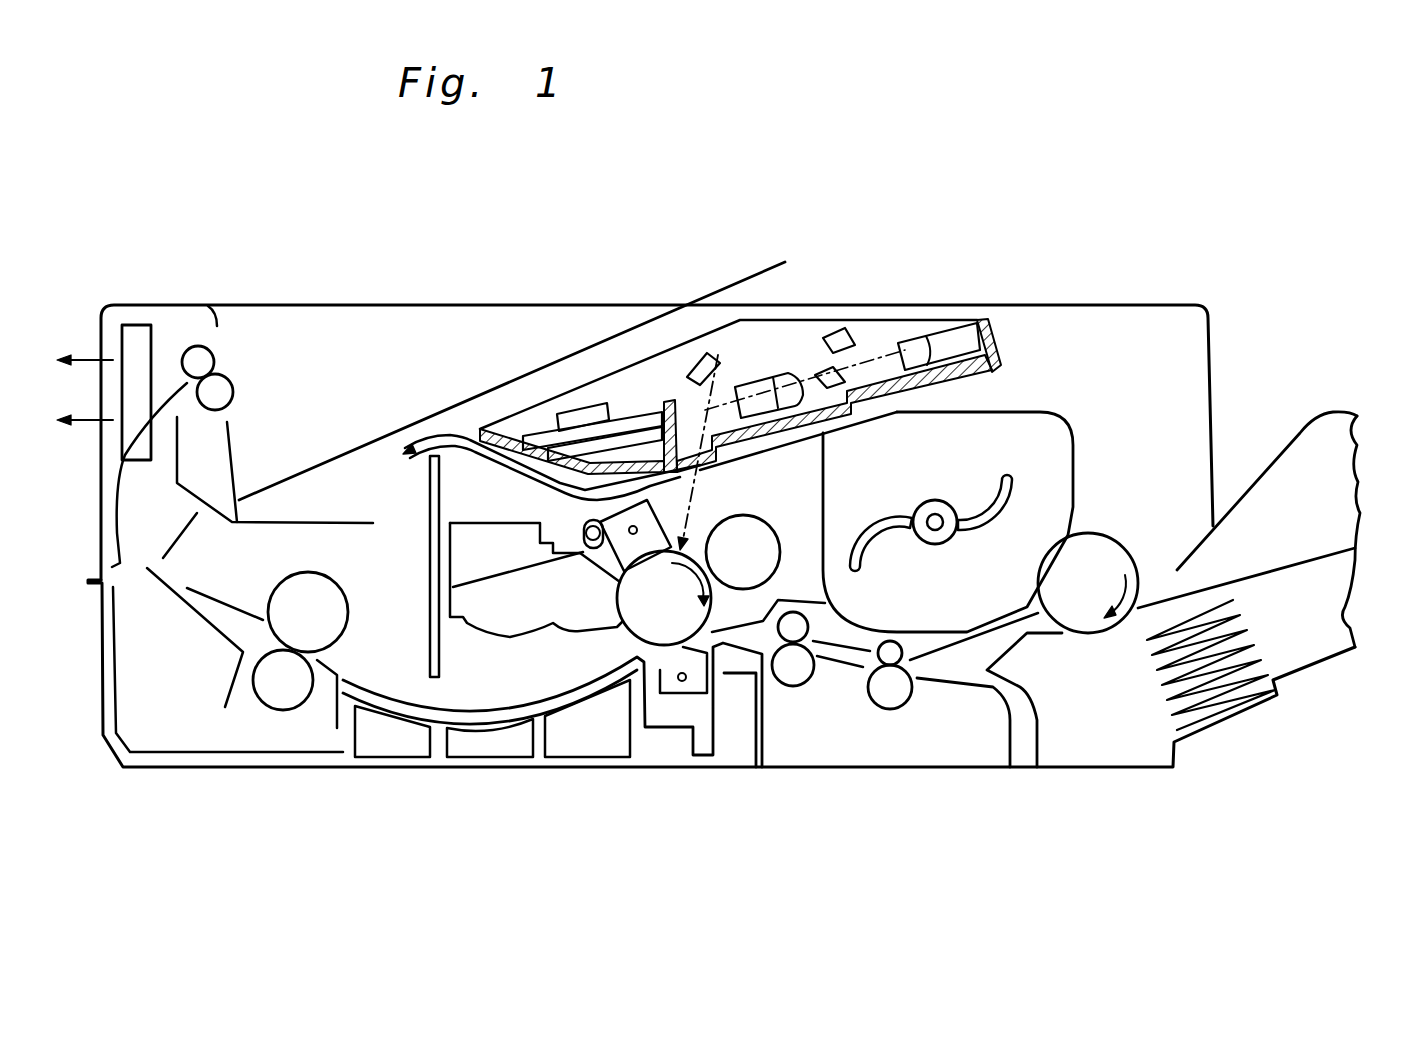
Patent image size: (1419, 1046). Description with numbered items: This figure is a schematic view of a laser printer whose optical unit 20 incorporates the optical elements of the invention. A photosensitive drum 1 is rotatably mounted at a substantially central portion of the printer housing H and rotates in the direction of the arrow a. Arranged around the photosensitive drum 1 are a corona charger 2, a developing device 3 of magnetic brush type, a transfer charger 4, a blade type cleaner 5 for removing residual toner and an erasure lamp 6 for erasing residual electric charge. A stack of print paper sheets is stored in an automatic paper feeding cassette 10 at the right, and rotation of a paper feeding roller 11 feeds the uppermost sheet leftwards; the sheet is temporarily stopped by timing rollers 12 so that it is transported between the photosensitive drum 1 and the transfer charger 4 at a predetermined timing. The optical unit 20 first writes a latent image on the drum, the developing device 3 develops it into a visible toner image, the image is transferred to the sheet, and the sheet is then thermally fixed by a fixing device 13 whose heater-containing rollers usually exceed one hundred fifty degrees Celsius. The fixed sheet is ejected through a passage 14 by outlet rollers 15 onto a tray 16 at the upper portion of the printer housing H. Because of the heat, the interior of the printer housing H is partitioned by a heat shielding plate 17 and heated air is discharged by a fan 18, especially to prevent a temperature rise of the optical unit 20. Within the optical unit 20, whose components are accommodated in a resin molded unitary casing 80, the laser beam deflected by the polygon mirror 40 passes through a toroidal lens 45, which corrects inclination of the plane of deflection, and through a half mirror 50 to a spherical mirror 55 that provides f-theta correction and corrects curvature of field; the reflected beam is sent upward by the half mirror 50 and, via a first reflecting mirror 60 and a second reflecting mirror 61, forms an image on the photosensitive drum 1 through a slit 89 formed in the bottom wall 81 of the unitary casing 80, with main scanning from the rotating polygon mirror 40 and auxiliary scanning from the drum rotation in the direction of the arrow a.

The photosensitive drum 1 is at (623, 643).
The corona charger 2 is at (617, 518).
The developing device 3 is at (1007, 423).
The transfer charger 4 is at (682, 682).
The blade type cleaner 5 is at (518, 610).
The erasure lamp 6 is at (580, 530).
The automatic paper feeding cassette 10 is at (1337, 523).
The paper feeding roller 11 is at (1105, 545).
The timing rollers 12 is at (793, 662).
The fixing device 13 is at (330, 581).
The passage 14 is at (190, 593).
The outlet rollers 15 is at (223, 383).
The tray 16 is at (333, 457).
The heat shielding plate 17 is at (428, 647).
The fan 18 is at (140, 325).
The optical unit 20 is at (887, 321).
The polygon mirror 40 is at (613, 427).
The toroidal lens 45 is at (780, 380).
The half mirror 50 is at (813, 363).
The spherical mirror 55 is at (913, 345).
The first reflecting mirror 60 is at (823, 330).
The second reflecting mirror 61 is at (720, 345).
The unitary casing 80 is at (1000, 338).
The bottom wall 81 is at (745, 443).
The slit 89 is at (735, 455).
The printer housing H is at (1208, 347).
The arrow a is at (690, 592).